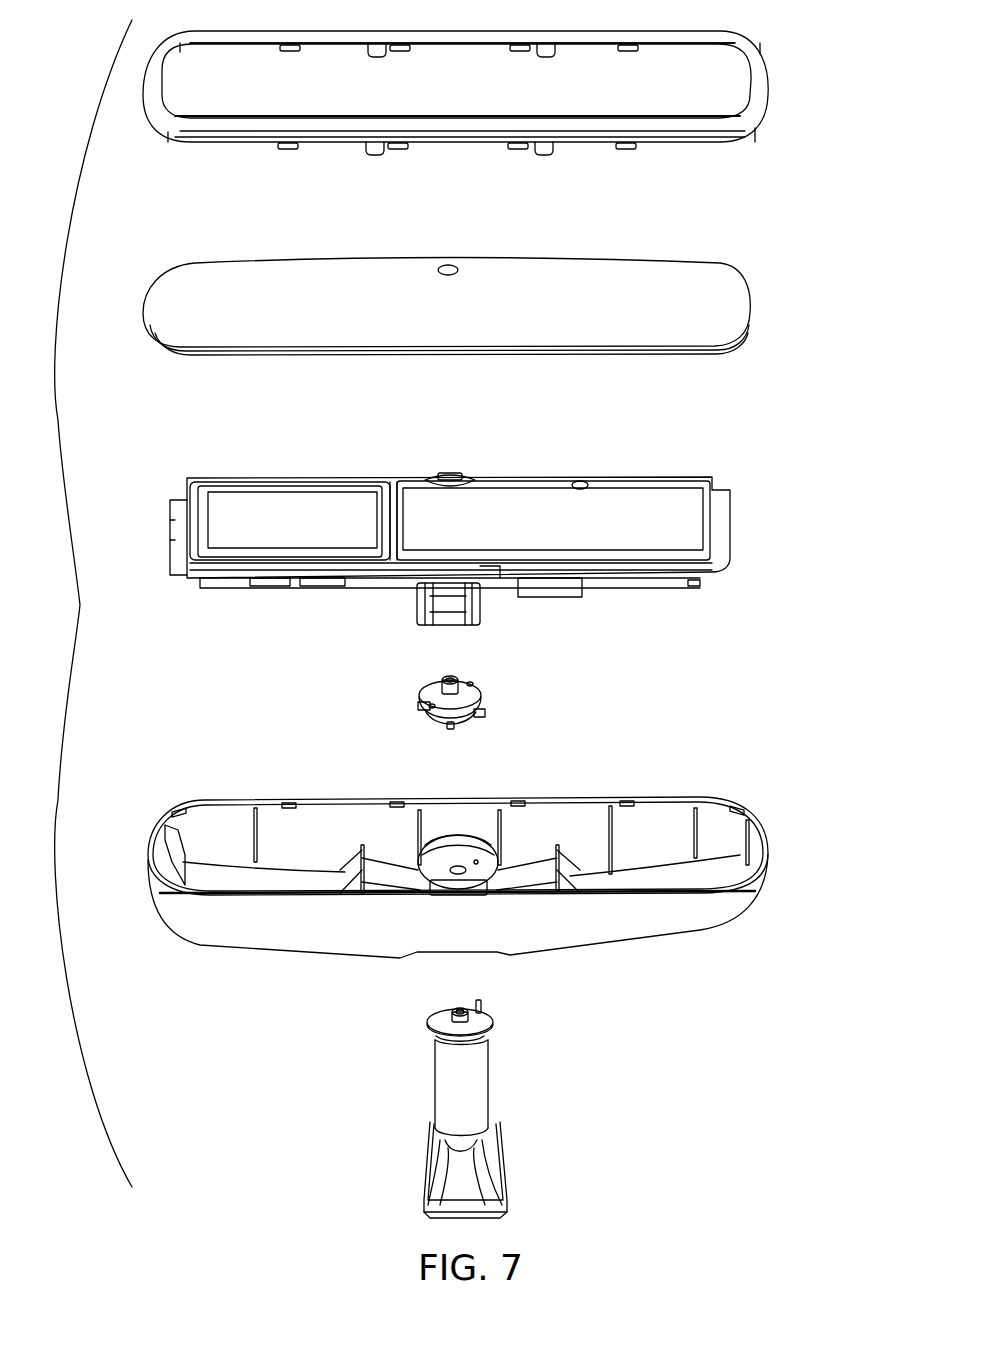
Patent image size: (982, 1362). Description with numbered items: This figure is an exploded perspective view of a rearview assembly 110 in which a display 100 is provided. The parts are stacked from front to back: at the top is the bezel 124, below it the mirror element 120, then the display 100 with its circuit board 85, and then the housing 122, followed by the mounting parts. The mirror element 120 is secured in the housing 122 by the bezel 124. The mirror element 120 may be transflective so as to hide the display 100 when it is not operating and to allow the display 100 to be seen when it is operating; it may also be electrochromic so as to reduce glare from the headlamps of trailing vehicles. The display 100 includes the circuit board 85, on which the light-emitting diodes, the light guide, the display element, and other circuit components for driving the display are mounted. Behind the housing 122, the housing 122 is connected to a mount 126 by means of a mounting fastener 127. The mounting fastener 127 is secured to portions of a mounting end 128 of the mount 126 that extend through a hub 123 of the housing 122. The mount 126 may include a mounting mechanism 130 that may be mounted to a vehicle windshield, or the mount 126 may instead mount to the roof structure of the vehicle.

The rearview assembly 110 is at (91, 603).
The bezel 124 is at (748, 42).
The mirror element 120 is at (720, 273).
The display 100 is at (215, 526).
The circuit board 85 is at (637, 582).
The mounting fastener 127 is at (477, 700).
The hub 123 is at (458, 862).
The housing 122 is at (722, 928).
The mounting end 128 is at (492, 1017).
The mount 126 is at (480, 1088).
The mounting mechanism 130 is at (500, 1170).